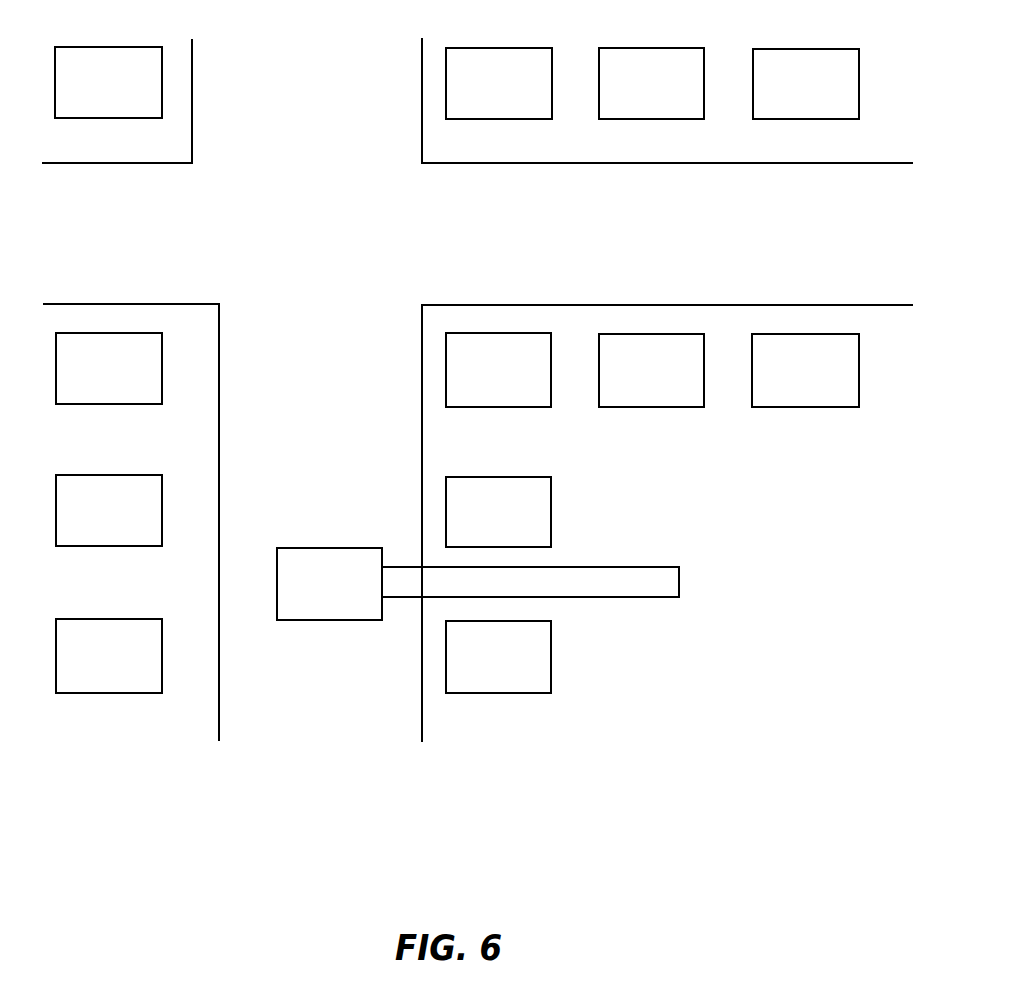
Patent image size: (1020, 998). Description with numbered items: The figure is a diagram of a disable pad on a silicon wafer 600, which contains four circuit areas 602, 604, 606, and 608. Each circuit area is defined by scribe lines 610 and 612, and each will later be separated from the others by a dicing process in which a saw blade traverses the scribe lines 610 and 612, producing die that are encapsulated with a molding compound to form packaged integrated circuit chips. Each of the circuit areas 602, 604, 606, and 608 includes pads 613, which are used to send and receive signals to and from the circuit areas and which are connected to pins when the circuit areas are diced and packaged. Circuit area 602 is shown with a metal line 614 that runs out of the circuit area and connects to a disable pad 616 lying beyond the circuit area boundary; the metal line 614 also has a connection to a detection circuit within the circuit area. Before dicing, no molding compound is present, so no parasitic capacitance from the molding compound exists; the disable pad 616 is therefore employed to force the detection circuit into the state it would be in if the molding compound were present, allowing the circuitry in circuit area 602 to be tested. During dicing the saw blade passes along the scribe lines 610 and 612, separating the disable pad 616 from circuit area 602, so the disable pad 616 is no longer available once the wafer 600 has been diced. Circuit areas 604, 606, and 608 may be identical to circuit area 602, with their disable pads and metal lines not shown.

The wafer 600 is at (305, 743).
The circuit area 602 is at (701, 744).
The circuit area 604 is at (84, 742).
The circuit area 606 is at (83, 152).
The circuit area 608 is at (479, 151).
The scribe line 610 is at (290, 459).
The scribe line 612 is at (881, 245).
The pad 613 is at (87, 95).
The metal line 614 is at (561, 593).
The disable pad 616 is at (309, 599).